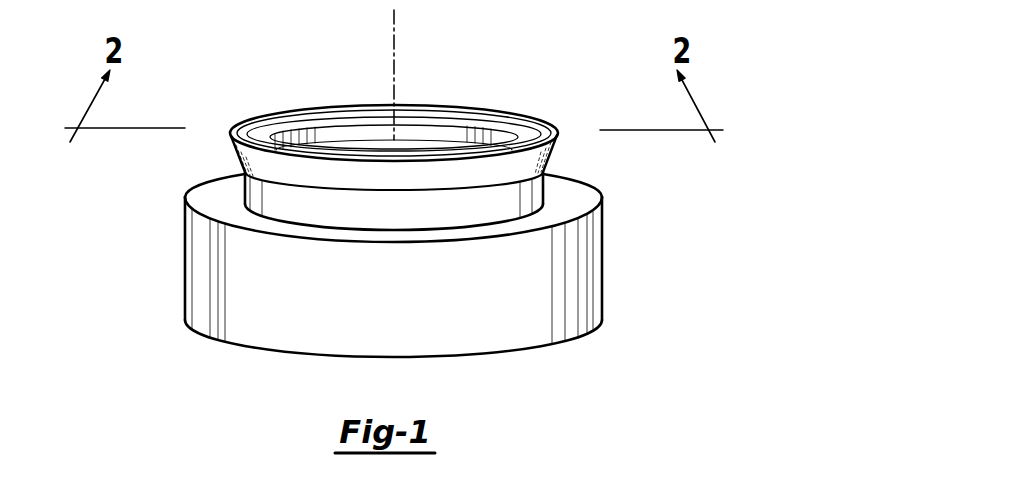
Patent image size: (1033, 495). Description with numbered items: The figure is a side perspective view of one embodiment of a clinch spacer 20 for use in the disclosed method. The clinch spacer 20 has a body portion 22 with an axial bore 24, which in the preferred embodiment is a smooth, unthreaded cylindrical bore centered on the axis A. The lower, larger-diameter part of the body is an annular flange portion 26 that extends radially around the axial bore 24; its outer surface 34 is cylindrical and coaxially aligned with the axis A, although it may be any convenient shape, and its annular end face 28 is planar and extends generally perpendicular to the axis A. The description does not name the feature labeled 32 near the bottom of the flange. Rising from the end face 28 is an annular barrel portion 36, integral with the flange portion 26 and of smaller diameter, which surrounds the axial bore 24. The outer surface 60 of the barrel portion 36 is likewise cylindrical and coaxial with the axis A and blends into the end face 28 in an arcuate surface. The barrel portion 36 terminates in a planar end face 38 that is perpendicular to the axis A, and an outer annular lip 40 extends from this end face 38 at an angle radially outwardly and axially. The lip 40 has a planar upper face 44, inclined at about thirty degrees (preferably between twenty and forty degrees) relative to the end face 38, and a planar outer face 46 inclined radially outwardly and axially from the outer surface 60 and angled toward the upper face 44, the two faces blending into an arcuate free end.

The clinch spacer 20 is at (371, 230).
The body portion 22 is at (338, 313).
The axial bore 24 is at (325, 138).
The annular flange portion 26 is at (583, 264).
The annular end face 28 is at (567, 193).
The bottom surface 32 is at (473, 358).
The outer surface 34 is at (500, 343).
The annular barrel portion 36 is at (438, 213).
The end face 38 is at (261, 137).
The outer annular lip 40 is at (431, 112).
The upper face 44 is at (483, 109).
The outer face 46 is at (392, 183).
The outer surface 60 is at (253, 190).
The axis A is at (395, 58).